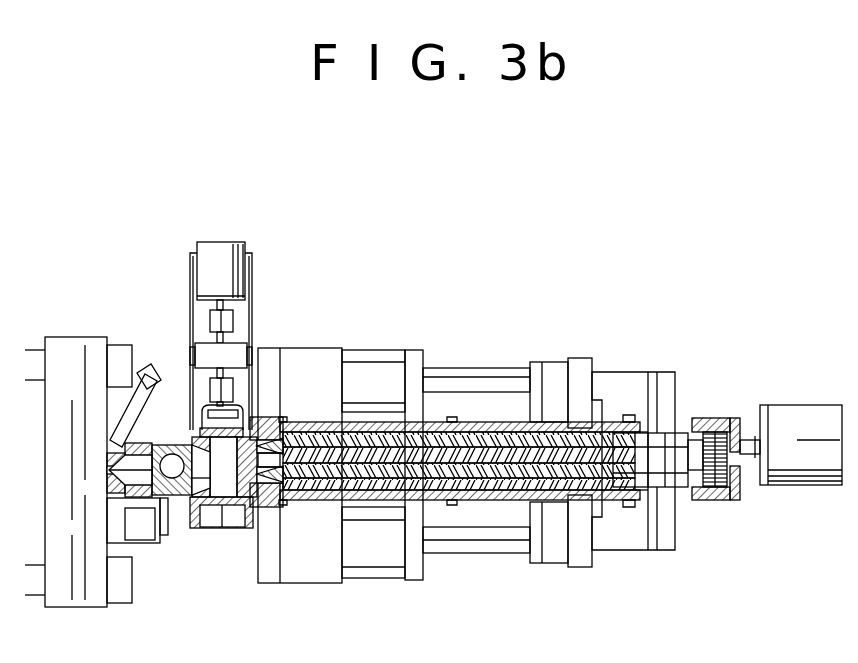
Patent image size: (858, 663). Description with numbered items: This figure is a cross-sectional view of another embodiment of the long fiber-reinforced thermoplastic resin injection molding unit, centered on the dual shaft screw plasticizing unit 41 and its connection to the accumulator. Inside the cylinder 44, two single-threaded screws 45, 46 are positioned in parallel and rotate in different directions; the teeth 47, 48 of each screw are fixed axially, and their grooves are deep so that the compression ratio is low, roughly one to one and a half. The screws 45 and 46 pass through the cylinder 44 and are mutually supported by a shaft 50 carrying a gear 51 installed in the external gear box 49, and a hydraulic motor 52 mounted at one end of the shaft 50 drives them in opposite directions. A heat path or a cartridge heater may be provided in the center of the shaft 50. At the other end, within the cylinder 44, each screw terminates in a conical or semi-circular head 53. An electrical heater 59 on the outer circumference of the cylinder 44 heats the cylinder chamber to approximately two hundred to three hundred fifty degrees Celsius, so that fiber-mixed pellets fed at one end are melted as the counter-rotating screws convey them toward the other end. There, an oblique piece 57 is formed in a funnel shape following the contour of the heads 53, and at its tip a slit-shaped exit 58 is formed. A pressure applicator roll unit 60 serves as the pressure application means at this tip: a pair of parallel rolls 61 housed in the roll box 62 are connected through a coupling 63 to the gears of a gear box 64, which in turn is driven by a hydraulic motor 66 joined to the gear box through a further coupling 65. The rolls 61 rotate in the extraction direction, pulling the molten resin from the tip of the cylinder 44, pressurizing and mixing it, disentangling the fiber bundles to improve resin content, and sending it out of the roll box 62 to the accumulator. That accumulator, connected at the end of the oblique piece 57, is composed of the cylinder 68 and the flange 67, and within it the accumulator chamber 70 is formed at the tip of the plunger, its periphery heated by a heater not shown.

The dual shaft screw plasticizing unit 41 is at (612, 382).
The cylinder 44 is at (585, 425).
The screw 45 is at (432, 422).
The screw 46 is at (480, 485).
The teeth 47 is at (548, 420).
The teeth 48 is at (548, 505).
The external gear box 49 is at (712, 418).
The shaft 50 is at (665, 487).
The gear 51 is at (737, 500).
The hydraulic motor 52 is at (797, 405).
The head 53 is at (285, 440).
The oblique piece 57 is at (272, 425).
The slit-shaped exit 58 is at (258, 470).
The electrical heater 59 is at (365, 420).
The pressure applicator roll unit 60 is at (232, 563).
The rolls 61 is at (217, 483).
The roll box 62 is at (218, 535).
The coupling 63 is at (233, 390).
The gear box 64 is at (240, 357).
The coupling block 65 is at (233, 320).
The hydraulic motor 66 is at (228, 242).
The flange 67 is at (190, 498).
The cylinder 68 is at (140, 385).
The accumulator chamber 70 is at (162, 443).